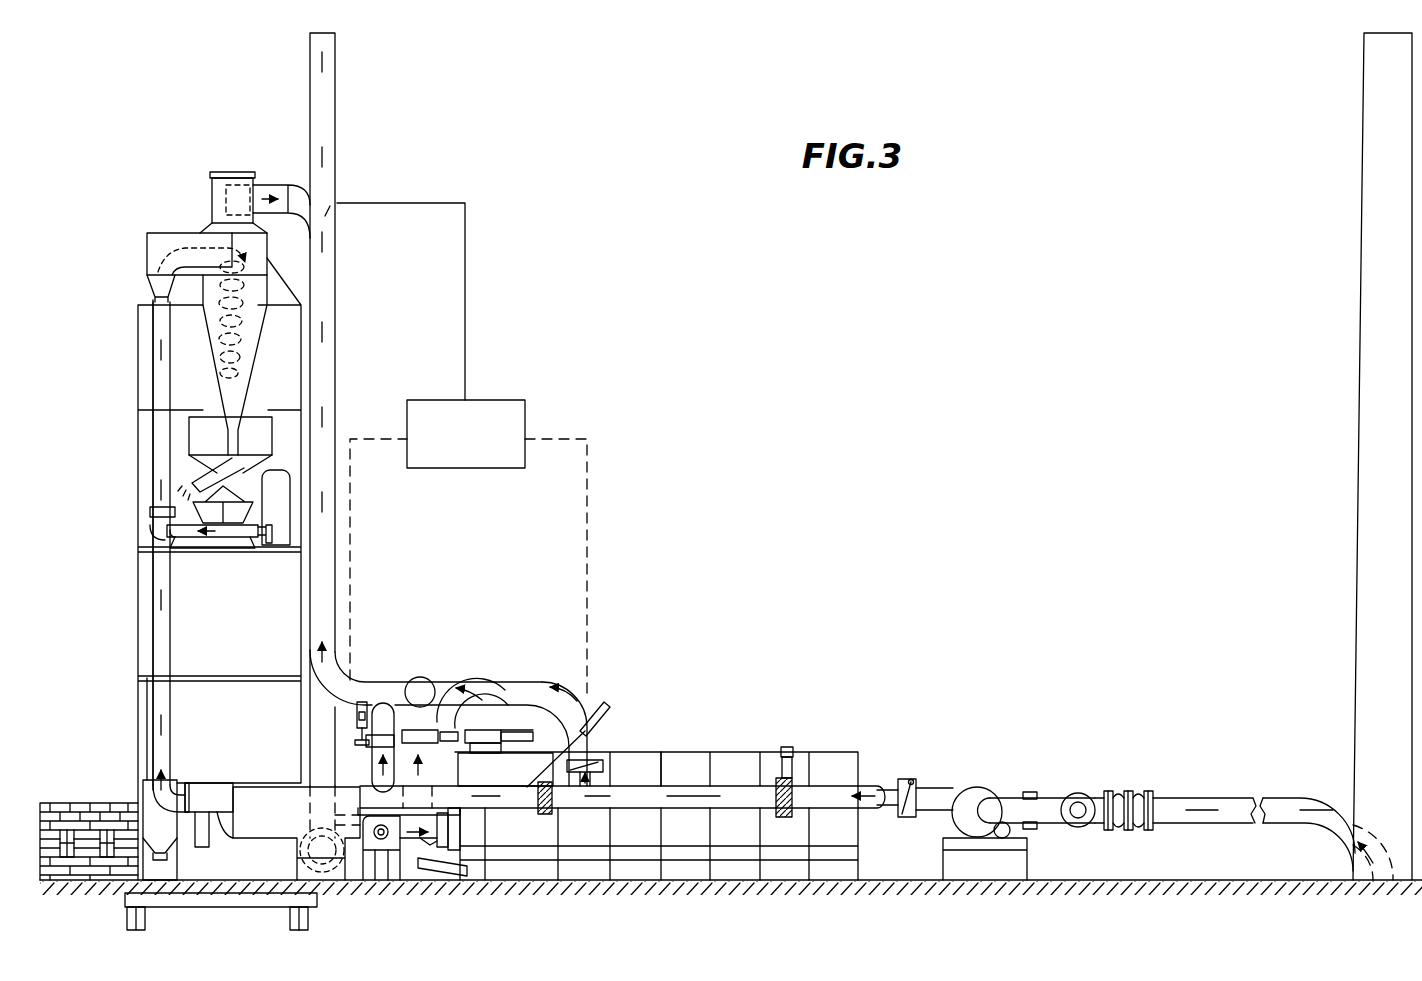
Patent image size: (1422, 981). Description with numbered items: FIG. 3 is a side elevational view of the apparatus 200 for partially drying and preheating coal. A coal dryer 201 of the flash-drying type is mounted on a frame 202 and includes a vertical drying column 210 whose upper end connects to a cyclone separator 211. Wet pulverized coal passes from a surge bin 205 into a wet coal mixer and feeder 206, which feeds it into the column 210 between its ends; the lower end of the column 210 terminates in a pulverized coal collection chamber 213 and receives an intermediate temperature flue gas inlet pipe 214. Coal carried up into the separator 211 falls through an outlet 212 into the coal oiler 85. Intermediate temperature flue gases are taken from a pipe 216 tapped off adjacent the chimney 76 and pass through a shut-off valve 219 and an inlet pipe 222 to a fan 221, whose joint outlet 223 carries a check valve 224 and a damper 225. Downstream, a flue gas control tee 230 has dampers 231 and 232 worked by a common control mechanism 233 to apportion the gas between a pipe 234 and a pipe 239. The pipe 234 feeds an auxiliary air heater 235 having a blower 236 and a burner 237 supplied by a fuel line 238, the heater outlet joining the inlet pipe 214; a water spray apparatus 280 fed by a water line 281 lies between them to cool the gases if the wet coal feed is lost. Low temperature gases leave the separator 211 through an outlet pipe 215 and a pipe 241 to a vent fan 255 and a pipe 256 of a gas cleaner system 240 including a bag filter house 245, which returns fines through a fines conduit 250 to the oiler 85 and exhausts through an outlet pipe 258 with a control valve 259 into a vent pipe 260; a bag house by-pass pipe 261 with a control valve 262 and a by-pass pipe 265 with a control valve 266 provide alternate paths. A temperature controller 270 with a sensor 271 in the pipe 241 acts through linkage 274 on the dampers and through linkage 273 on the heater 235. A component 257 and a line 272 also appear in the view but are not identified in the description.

The apparatus for partially drying and preheating coal 200 is at (47, 263).
The chimney 76 is at (1358, 578).
The coal oiler 85 is at (290, 507).
The coal dryer 201 is at (150, 452).
The frame 202 is at (137, 659).
The surge bin 205 is at (190, 433).
The wet coal mixer and feeder 206 is at (222, 540).
The vertical drying column 210 is at (152, 363).
The cyclone separator 211 is at (203, 337).
The outlet 212 is at (187, 470).
The pulverized coal collection chamber 213 is at (152, 808).
The intermediate temperature flue gas inlet pipe 214 is at (174, 797).
The outlet pipe 215 is at (271, 183).
The pipe 216 is at (1292, 798).
The shut-off valve 219 is at (1034, 790).
The fan 221 is at (974, 788).
The inlet pipe 222 is at (1047, 815).
The joint outlet 223 is at (934, 783).
The check valve 224 is at (899, 779).
The damper 225 is at (790, 775).
The flue gas control tee 230 is at (607, 787).
The damper 231 is at (548, 814).
The damper 232 is at (602, 760).
The common control mechanism 233 is at (607, 700).
The pipe 234 is at (465, 795).
The auxiliary air heater 235 is at (276, 816).
The blower 236 is at (382, 855).
The burner 237 is at (370, 852).
The fuel line 238 is at (401, 862).
The pipe 239 is at (555, 682).
The gas cleaner system 240 is at (708, 725).
The pipe 241 is at (302, 183).
The bag filter house 245 is at (730, 760).
The fines conduit 250 is at (445, 873).
The vent fan 255 is at (300, 862).
The pipe 256 is at (430, 840).
The fuel pump 257 is at (449, 832).
The outlet pipe 258 is at (492, 730).
The control valve 259 is at (527, 730).
The vent pipe 260 is at (337, 150).
The bag house by-pass pipe 261 is at (431, 682).
The control valve 262 is at (425, 732).
The by-pass pipe 265 is at (386, 704).
The control valve 266 is at (358, 745).
The temperature controller 270 is at (506, 399).
The sensor 271 is at (318, 203).
The sensor lead 272 is at (466, 255).
The linkage 273 is at (352, 552).
The linkage 274 is at (588, 505).
The water spray apparatus 280 is at (200, 798).
The water line 281 is at (221, 912).